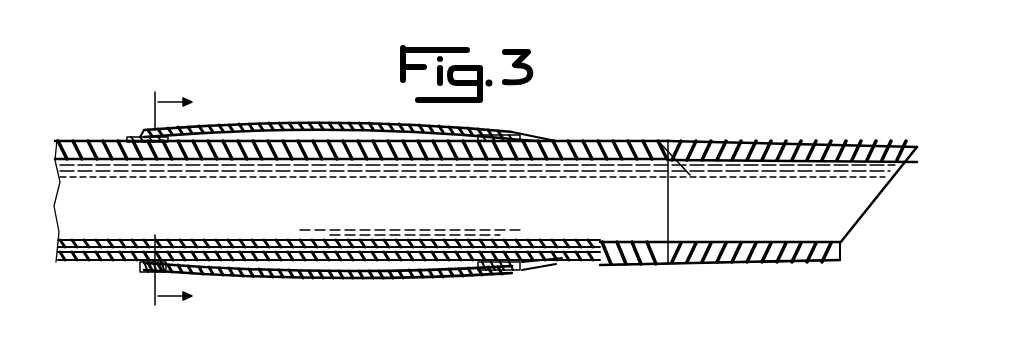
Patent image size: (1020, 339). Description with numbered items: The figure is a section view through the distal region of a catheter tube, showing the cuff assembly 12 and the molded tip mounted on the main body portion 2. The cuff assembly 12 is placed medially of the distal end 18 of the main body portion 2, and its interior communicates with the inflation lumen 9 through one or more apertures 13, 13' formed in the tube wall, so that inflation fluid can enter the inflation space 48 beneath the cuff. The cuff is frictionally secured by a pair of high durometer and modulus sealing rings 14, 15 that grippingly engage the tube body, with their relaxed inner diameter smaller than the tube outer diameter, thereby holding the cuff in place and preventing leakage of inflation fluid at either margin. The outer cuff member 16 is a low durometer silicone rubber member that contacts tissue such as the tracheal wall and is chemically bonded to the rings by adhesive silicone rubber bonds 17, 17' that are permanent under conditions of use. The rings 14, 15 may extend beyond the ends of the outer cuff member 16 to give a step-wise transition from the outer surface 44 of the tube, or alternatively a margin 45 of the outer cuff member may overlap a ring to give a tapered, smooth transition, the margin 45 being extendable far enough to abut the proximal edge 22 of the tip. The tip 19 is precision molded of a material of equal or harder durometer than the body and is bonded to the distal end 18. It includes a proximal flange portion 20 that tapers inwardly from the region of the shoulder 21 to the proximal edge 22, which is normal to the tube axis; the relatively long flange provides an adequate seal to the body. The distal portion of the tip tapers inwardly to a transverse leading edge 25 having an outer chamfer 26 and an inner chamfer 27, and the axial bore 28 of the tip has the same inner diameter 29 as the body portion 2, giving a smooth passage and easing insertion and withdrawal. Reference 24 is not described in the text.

The main body portion 2 is at (154, 198).
The inflation lumen 9 is at (86, 262).
The cuff assembly 12 is at (342, 98).
The aperture 13 is at (329, 282).
The aperture 13' is at (286, 282).
The sealing ring 14 is at (524, 132).
The sealing ring 15 is at (136, 136).
The outer cuff member 16 is at (281, 124).
The bond 17 is at (187, 108).
The bond 17' is at (521, 114).
The distal end 18 is at (668, 213).
The tip 19 is at (763, 114).
The proximal flange portion 20 is at (640, 265).
The shoulder 21 is at (690, 175).
The proximal edge 22 is at (552, 140).
The upper tip surface 24 is at (838, 145).
The transverse leading edge 25 is at (886, 195).
The outer chamfer 26 is at (918, 147).
The inner chamfer 27 is at (842, 243).
The axial bore 28 is at (710, 243).
The inner diameter 29 is at (538, 242).
The outer surface 44 is at (78, 140).
The margin 45 is at (520, 271).
The inflation space 48 is at (402, 270).